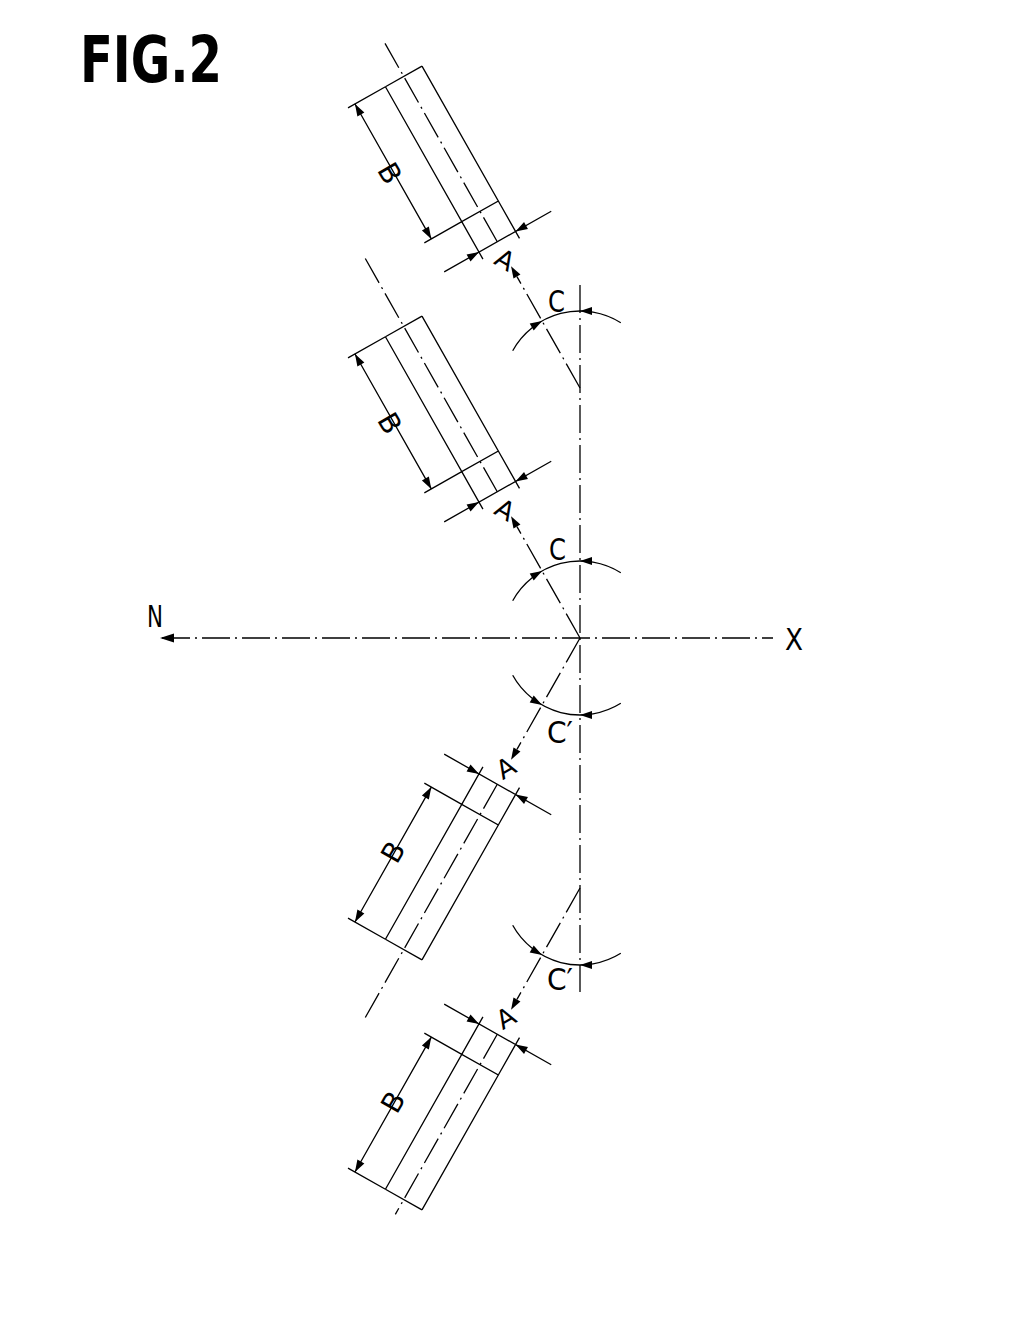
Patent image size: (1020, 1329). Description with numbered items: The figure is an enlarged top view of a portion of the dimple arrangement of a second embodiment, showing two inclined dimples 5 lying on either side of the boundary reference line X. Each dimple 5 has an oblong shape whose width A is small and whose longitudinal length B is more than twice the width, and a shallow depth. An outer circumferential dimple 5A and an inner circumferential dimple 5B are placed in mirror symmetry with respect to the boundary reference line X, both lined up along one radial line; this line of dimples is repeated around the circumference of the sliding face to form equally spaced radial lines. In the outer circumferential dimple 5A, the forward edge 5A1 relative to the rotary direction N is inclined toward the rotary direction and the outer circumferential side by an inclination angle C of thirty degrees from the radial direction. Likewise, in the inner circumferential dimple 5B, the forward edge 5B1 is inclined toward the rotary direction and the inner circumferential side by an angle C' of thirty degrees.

The inclined dimple 5 is at (459, 628).
The outer circumferential dimple 5A is at (453, 136).
The forward edge 5A1 is at (400, 79).
The inner circumferential dimple 5B is at (440, 917).
The forward edge 5B1 is at (400, 948).